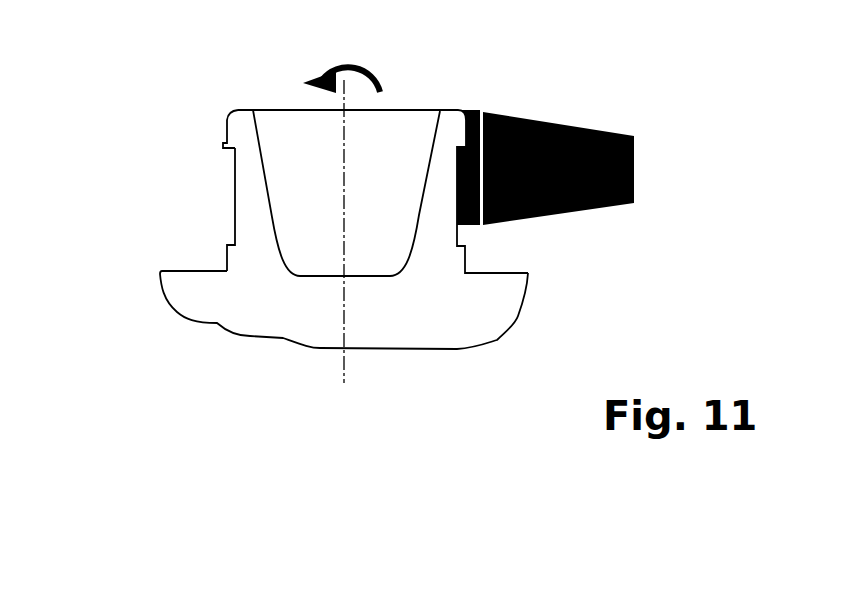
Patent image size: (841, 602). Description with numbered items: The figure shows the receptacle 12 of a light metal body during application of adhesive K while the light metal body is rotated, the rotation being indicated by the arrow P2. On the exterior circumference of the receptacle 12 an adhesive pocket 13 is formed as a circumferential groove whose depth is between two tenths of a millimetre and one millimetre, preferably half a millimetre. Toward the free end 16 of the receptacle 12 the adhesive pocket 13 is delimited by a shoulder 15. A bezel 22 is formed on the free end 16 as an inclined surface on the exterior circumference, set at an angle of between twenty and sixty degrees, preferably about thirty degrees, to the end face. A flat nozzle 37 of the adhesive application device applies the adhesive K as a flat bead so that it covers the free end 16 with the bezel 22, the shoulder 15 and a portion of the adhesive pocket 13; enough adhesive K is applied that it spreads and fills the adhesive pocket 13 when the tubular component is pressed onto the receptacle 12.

The receptacle 12 is at (290, 151).
The adhesive pocket 13 is at (229, 198).
The shoulder 15 is at (228, 131).
The free end 16 is at (235, 100).
The bezel 22 is at (232, 112).
The nozzle 37 is at (630, 128).
The adhesive K is at (473, 112).
The arrow indicating rotation P2 is at (354, 63).